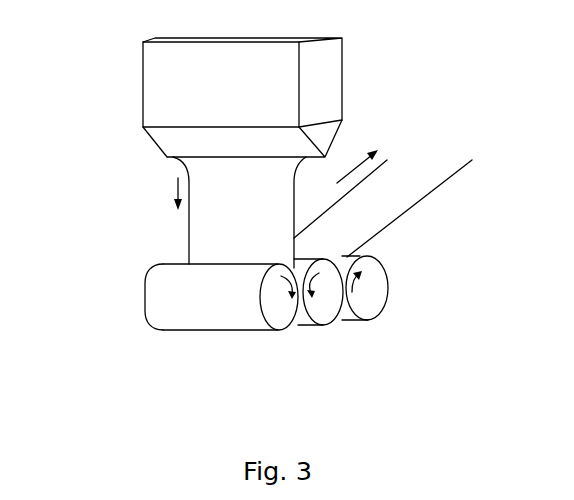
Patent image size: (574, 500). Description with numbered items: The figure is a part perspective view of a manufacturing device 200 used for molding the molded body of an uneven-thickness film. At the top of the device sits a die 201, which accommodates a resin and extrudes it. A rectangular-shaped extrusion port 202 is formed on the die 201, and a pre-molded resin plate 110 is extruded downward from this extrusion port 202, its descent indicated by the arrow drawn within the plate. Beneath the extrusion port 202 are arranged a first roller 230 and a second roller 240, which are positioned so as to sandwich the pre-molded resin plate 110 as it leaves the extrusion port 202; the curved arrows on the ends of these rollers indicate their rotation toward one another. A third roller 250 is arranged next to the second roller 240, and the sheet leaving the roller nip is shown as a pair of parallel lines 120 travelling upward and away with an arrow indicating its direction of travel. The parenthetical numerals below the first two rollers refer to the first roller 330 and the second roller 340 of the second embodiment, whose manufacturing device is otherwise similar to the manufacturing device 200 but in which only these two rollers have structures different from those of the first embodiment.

The manufacturing device 200 is at (434, 59).
The die 201 is at (143, 78).
The extrusion port 202 is at (163, 157).
The pre-molded resin plate 110 is at (195, 212).
The compressed sheet 120 is at (418, 188).
The first roller 230 is at (228, 318).
The first roller 330 is at (221, 347).
The second roller 240 is at (323, 317).
The second roller 340 is at (311, 345).
The third roller 250 is at (380, 310).